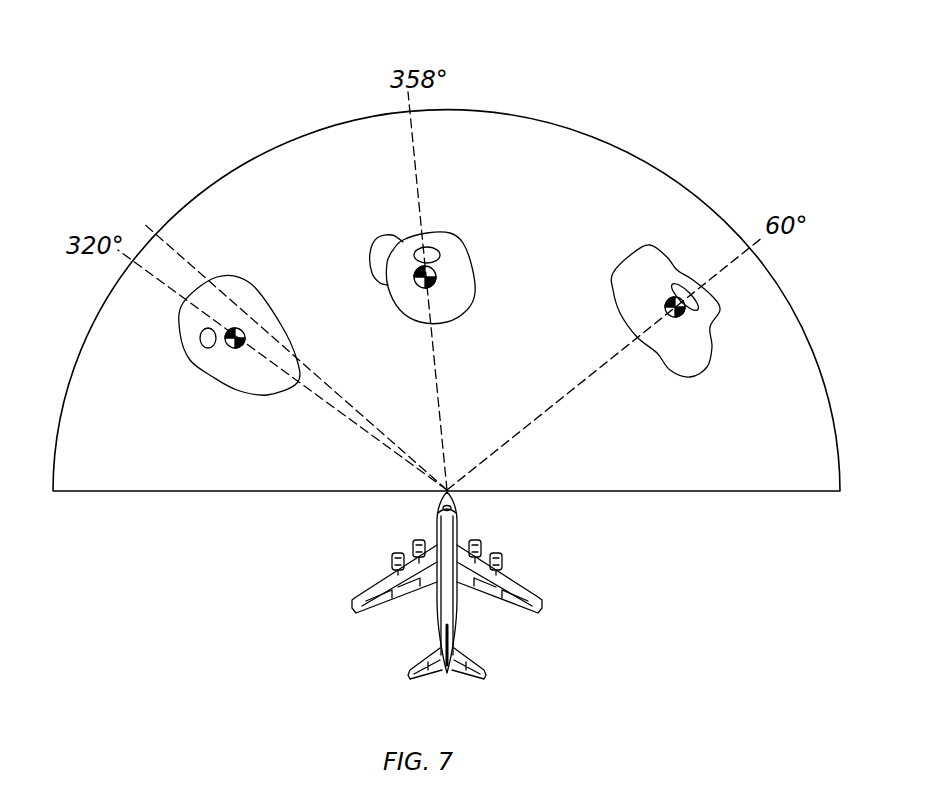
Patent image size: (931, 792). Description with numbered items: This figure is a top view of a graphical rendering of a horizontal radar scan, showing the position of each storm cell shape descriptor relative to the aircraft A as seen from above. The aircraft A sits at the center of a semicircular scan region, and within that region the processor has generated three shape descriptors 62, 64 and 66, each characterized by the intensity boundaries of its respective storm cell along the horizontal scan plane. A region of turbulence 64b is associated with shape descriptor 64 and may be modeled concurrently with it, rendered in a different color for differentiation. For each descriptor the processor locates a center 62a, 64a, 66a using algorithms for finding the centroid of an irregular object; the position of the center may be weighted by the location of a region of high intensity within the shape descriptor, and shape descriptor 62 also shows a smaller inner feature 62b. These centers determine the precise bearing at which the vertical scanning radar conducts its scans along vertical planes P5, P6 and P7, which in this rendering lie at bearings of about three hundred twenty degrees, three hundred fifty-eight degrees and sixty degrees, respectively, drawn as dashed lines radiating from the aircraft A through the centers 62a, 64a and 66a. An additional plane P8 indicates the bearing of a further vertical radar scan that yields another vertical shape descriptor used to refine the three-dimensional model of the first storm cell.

The aircraft A is at (453, 630).
The shape descriptor 62 is at (265, 383).
The center of shape descriptor 62a is at (238, 348).
The core of first weather cell 62b is at (202, 345).
The shape descriptor 64 is at (465, 310).
The center of shape descriptor 64a is at (437, 273).
The region of turbulence 64b is at (383, 243).
The shape descriptor 66 is at (685, 372).
The center of shape descriptor 66a is at (683, 314).
The vertical plane P5 is at (122, 252).
The vertical plane P6 is at (410, 152).
The vertical plane P7 is at (750, 241).
The plane P8 is at (150, 231).